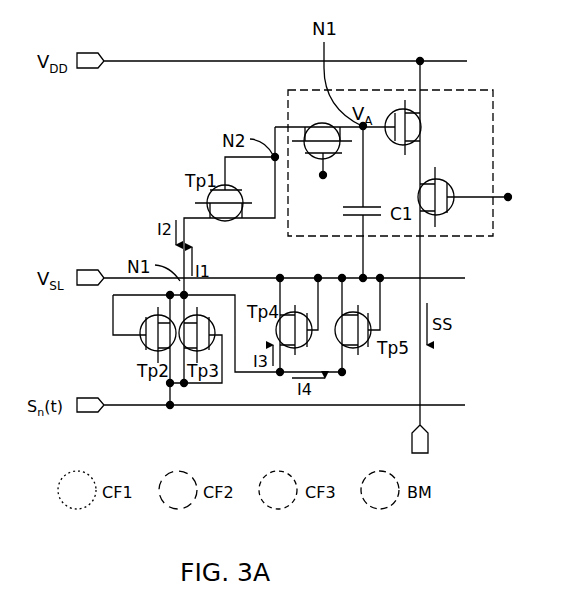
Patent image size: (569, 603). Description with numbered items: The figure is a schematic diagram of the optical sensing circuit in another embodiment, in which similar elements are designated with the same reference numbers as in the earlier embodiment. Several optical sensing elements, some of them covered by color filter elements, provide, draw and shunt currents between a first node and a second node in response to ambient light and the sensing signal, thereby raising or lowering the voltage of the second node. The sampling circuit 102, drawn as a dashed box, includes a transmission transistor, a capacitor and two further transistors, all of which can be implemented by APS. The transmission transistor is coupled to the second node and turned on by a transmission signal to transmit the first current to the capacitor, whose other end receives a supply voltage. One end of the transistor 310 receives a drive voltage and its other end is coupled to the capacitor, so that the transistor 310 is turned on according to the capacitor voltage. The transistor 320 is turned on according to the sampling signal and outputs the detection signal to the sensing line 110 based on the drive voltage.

The sampling circuit 102 is at (493, 119).
The transistor 310 is at (410, 127).
The transistor 320 is at (465, 197).
The sensing line 110 is at (422, 374).